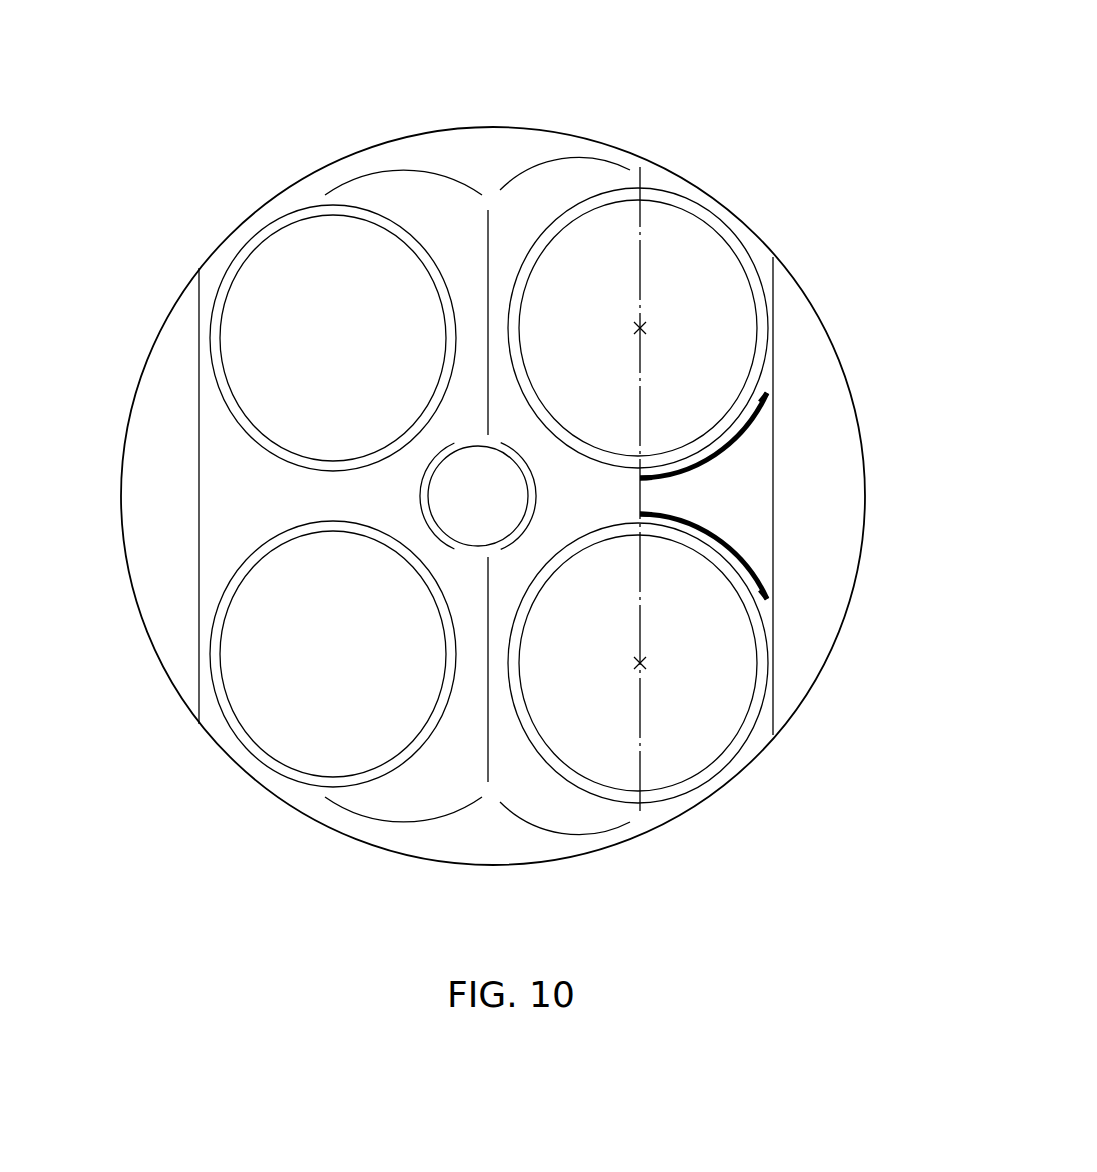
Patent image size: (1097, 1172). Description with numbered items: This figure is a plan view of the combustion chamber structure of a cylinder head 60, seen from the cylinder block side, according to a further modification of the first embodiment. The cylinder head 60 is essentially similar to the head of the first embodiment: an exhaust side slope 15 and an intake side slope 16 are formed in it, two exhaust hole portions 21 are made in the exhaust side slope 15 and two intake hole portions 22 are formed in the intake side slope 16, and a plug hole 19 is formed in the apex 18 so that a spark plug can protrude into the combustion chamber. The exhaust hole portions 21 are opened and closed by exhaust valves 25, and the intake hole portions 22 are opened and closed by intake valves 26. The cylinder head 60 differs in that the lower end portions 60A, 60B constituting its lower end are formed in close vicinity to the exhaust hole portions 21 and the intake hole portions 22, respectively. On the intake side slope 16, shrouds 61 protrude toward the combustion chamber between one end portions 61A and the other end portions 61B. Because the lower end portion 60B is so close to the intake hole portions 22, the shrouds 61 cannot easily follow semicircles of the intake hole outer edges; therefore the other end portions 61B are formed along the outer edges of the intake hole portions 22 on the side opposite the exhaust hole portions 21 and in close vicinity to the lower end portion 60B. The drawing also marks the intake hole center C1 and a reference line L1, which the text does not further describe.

The cylinder head 60 is at (742, 86).
The lower end portion 60A is at (135, 525).
The lower end portion 60B is at (843, 585).
The exhaust side slope 15 is at (427, 195).
The intake side slope 16 is at (542, 193).
The apex 18 is at (487, 772).
The plug hole 19 is at (470, 549).
The exhaust hole portion 21 is at (232, 263).
The intake hole portion 22 is at (545, 230).
The exhaust valve 25 is at (265, 254).
The intake valve 26 is at (724, 260).
The shroud 61 is at (747, 446).
The one end portion 61A is at (640, 478).
The other end portion 61B is at (767, 393).
The center of second through hole C1 is at (635, 664).
The center line L1 is at (643, 498).